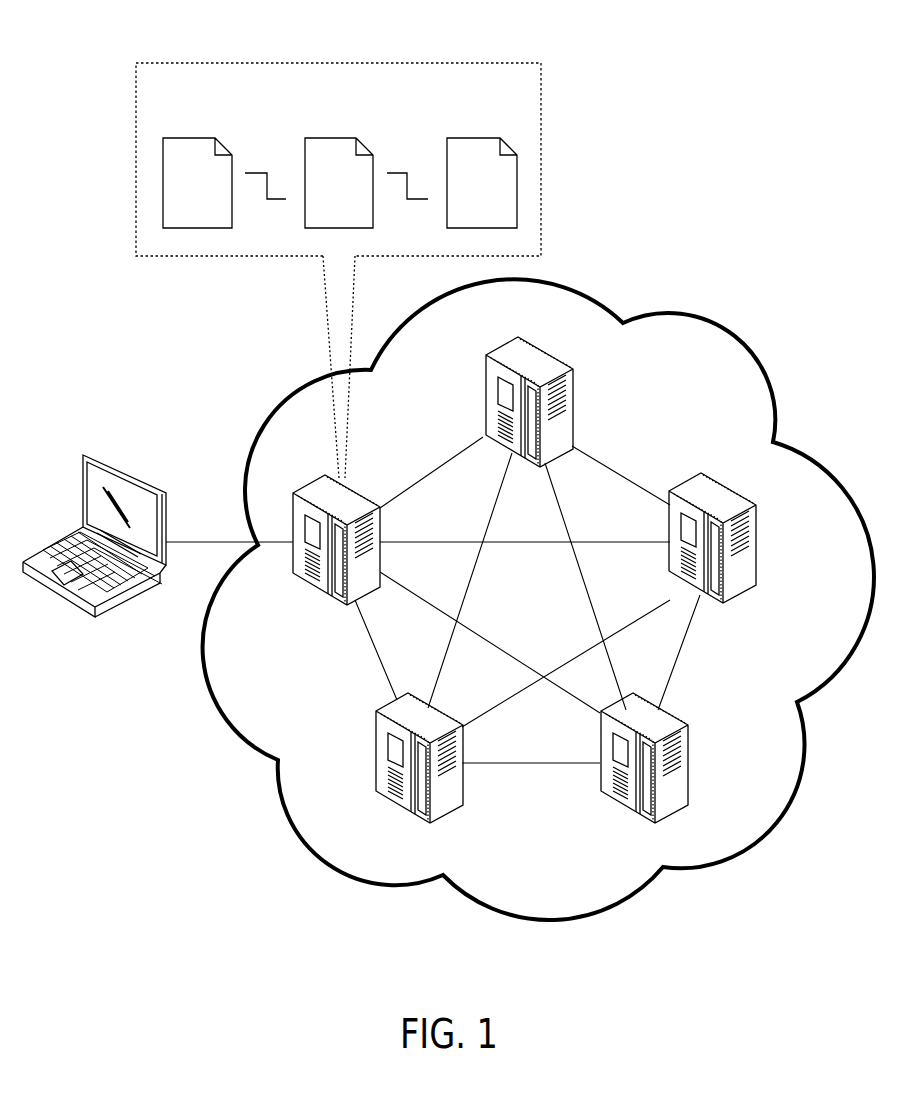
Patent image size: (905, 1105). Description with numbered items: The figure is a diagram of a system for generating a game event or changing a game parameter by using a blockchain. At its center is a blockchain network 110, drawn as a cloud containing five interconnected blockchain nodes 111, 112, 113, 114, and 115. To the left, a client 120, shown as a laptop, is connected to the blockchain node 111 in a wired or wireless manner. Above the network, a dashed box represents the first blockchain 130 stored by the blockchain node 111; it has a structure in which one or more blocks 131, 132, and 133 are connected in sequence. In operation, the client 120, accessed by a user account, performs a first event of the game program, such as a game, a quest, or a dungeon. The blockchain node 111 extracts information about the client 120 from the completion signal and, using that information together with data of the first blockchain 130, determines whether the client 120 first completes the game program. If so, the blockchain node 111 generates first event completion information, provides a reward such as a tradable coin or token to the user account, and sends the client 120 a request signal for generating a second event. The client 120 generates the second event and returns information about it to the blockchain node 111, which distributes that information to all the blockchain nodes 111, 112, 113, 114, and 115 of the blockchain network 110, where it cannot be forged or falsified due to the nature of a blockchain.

The blockchain network 110 is at (733, 340).
The blockchain node 111 is at (308, 483).
The blockchain node 112 is at (403, 810).
The blockchain node 113 is at (625, 812).
The blockchain node 114 is at (728, 492).
The blockchain node 115 is at (545, 352).
The client 120 is at (130, 470).
The first blockchain 130 is at (338, 63).
The block 131 is at (197, 138).
The block 132 is at (338, 138).
The block 133 is at (483, 138).